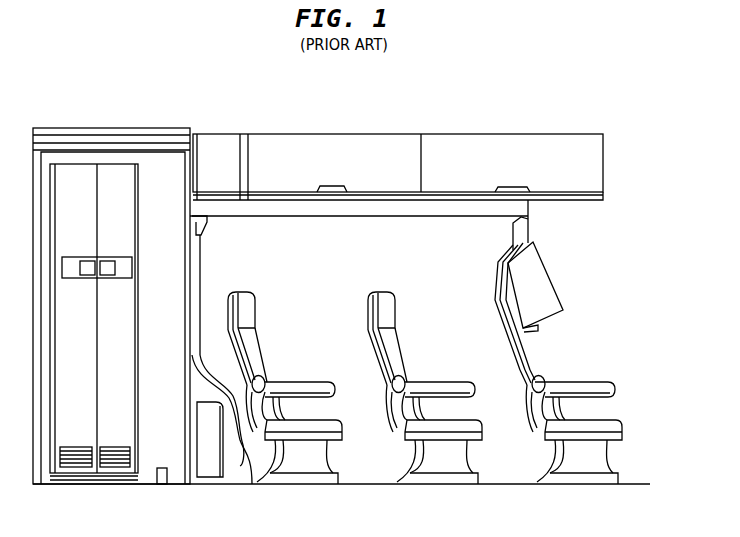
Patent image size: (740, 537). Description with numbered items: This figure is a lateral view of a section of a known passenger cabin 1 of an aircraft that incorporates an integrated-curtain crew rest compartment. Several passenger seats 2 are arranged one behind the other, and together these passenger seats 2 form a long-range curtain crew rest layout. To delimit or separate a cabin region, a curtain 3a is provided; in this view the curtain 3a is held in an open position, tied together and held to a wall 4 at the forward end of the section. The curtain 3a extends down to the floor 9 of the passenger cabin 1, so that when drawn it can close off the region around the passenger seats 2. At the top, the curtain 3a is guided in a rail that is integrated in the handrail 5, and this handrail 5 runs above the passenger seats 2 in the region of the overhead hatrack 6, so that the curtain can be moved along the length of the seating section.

The passenger cabin 1 is at (600, 310).
The passenger seats 2 is at (590, 458).
The curtain 3a is at (243, 447).
The wall 4 is at (178, 470).
The handrail 5 is at (285, 210).
The hatrack 6 is at (353, 158).
The floor 9 is at (503, 485).